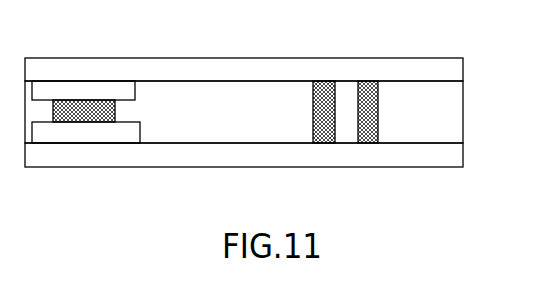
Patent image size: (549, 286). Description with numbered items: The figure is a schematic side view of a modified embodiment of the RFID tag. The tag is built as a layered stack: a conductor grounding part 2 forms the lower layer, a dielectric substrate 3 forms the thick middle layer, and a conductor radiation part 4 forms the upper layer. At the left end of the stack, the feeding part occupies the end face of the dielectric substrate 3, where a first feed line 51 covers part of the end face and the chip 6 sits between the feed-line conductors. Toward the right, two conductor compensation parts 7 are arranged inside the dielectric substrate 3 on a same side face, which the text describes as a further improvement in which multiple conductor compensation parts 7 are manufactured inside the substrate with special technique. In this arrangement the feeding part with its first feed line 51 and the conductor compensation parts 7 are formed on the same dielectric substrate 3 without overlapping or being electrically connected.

The conductor grounding part 2 is at (447, 162).
The dielectric substrate 3 is at (453, 115).
The conductor radiation part 4 is at (453, 68).
The first feed line 51 is at (74, 88).
The chip 6 is at (108, 97).
The conductor compensation part 7 is at (325, 100).